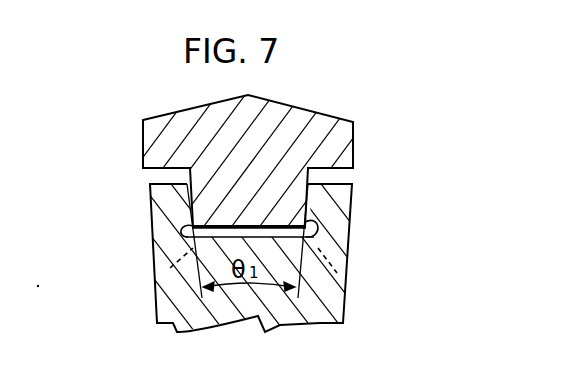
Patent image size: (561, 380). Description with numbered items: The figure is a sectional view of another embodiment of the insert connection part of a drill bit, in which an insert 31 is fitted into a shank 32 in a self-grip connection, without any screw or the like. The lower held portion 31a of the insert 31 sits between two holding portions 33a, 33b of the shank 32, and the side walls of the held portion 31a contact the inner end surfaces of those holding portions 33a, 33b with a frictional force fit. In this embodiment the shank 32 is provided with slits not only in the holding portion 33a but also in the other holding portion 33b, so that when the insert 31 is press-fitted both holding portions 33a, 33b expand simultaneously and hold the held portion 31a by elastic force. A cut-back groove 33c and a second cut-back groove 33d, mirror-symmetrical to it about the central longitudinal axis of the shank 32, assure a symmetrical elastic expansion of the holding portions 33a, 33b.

The insert 31 is at (360, 128).
The held portion 31a is at (293, 200).
The shank 32 is at (142, 303).
The holding portion 33a is at (160, 222).
The holding portion 33b is at (347, 240).
The cut-back groove 33c is at (187, 225).
The second cut-back groove 33d is at (315, 230).